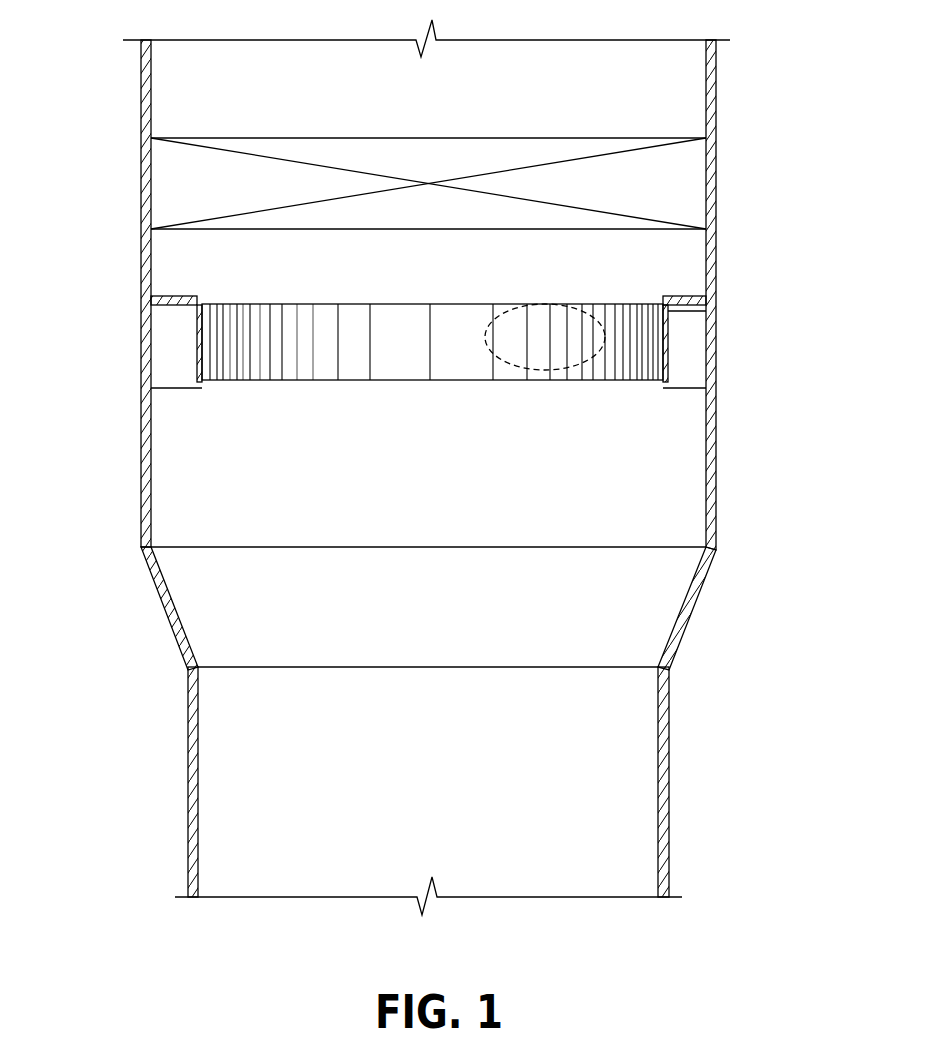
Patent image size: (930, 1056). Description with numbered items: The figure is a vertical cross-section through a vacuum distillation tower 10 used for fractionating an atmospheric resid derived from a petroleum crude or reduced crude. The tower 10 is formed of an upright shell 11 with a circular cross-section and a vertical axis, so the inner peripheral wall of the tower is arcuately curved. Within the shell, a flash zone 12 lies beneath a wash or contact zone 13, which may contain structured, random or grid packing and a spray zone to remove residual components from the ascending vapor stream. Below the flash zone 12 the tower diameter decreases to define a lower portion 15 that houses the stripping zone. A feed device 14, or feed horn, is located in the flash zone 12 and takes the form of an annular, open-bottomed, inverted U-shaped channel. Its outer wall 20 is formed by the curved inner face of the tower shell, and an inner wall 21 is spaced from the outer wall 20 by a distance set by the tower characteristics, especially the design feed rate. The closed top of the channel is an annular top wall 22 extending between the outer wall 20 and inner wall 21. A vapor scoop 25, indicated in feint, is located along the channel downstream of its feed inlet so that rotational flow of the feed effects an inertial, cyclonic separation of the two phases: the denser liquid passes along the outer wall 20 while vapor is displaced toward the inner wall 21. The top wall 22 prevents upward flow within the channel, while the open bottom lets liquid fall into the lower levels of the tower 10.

The vacuum distillation tower 10 is at (752, 490).
The upright shell 11 is at (717, 415).
The flash zone 12 is at (182, 458).
The wash zone 13 is at (662, 188).
The feed device 14 is at (642, 296).
The lower portion 15 is at (625, 800).
The outer wall 20 is at (690, 350).
The inner wall 21 is at (668, 370).
The top wall 22 is at (178, 297).
The vapor scoop 25 is at (553, 370).